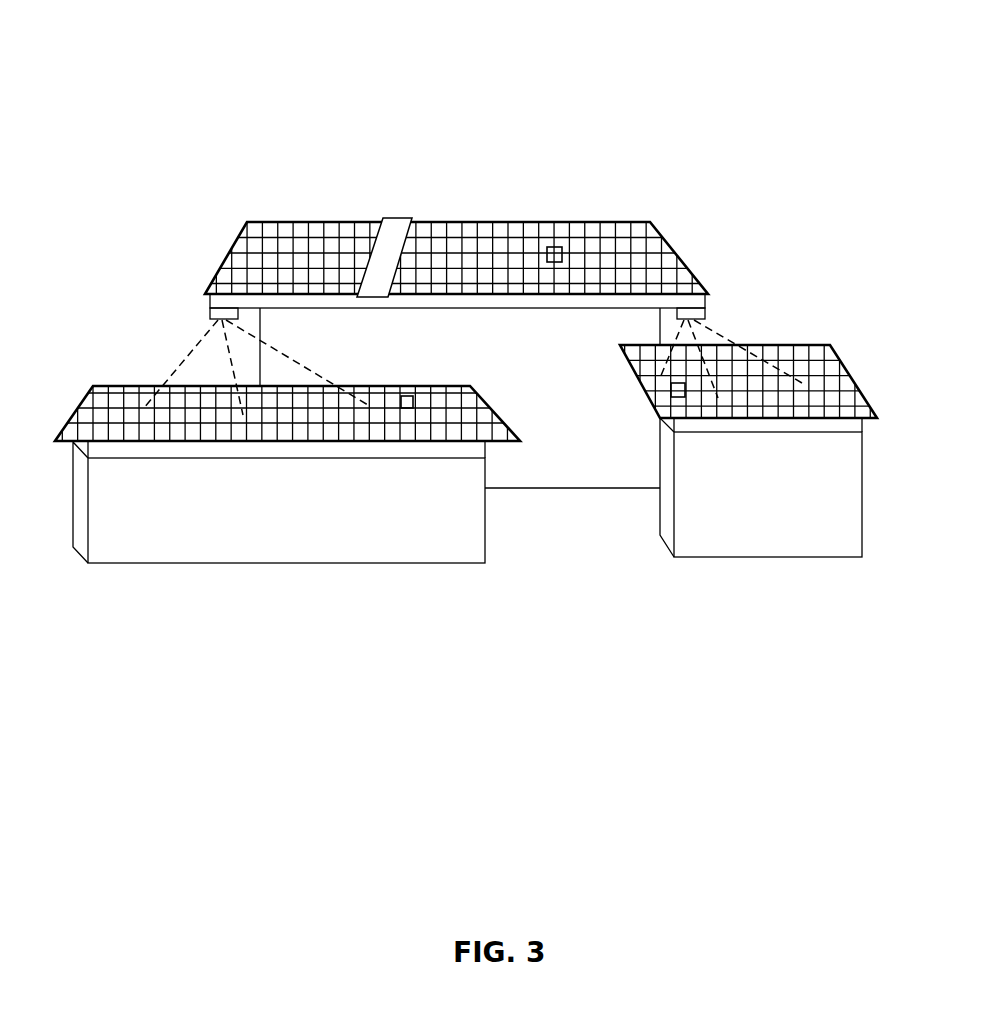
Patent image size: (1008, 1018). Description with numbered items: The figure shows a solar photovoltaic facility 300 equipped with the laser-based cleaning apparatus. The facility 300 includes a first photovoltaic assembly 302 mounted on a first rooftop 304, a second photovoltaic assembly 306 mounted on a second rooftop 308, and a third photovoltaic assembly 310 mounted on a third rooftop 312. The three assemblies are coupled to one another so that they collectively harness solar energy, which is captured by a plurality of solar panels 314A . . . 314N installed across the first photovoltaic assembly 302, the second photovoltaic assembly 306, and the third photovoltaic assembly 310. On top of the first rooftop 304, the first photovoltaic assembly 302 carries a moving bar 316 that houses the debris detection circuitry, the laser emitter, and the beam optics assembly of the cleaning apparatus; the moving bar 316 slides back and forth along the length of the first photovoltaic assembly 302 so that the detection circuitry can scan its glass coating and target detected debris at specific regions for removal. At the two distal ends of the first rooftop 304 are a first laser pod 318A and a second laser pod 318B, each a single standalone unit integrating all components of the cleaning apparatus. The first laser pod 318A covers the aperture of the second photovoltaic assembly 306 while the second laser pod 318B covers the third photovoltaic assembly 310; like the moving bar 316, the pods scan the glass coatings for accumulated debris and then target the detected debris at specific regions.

The solar photovoltaic facility 300 is at (772, 88).
The first photovoltaic assembly 302 is at (538, 222).
The first rooftop 304 is at (527, 300).
The second photovoltaic assembly 306 is at (127, 386).
The second rooftop 308 is at (142, 453).
The third photovoltaic assembly 310 is at (803, 345).
The third rooftop 312 is at (828, 425).
The solar panel 314A is at (543, 454).
The solar panel 314N is at (553, 262).
The moving bar 316 is at (392, 240).
The first laser pod 318A is at (210, 316).
The second laser pod 318B is at (705, 318).